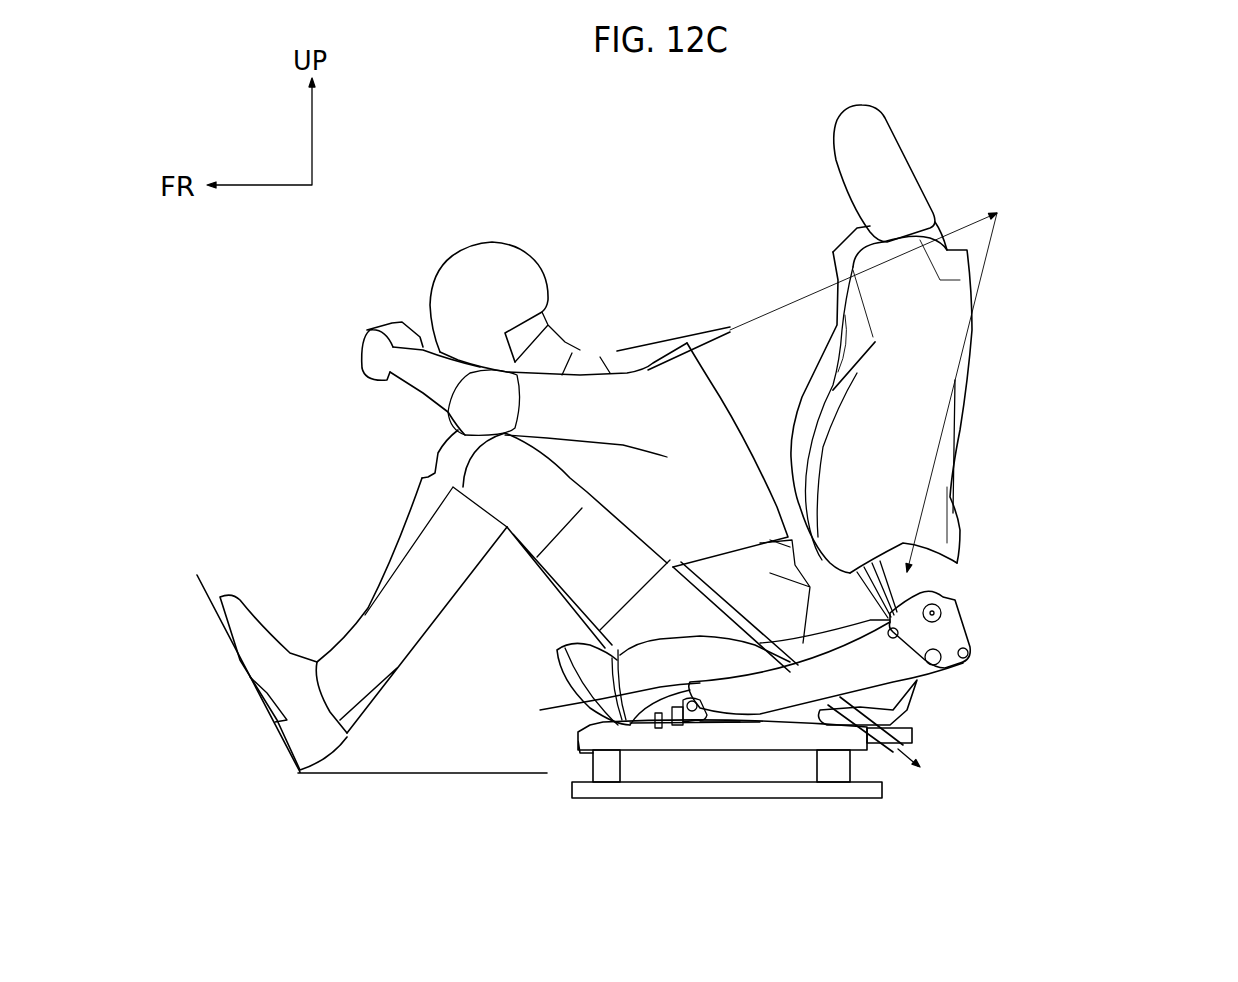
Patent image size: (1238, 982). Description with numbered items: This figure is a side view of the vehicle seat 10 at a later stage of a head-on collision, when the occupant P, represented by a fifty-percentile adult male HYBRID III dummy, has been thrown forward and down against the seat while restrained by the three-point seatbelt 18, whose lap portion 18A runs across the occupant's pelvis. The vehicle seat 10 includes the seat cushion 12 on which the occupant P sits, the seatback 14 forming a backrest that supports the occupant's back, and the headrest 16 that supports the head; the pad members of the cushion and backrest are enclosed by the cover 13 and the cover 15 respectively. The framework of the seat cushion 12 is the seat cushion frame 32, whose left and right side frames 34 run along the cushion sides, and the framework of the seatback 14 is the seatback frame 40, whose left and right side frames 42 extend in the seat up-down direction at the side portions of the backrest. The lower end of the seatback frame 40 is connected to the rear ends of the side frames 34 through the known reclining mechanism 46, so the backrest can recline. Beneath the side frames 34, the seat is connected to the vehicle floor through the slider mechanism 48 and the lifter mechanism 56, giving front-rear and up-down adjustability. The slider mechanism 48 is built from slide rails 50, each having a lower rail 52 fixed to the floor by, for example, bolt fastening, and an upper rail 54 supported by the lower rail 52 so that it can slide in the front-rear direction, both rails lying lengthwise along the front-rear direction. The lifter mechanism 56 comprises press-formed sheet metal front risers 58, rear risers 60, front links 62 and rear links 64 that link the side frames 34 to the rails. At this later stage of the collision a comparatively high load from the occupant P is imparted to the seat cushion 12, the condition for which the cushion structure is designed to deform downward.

The vehicle seat 10 is at (1072, 262).
The seat cushion 12 is at (548, 656).
The cover 13 is at (660, 667).
The seatback 14 is at (967, 380).
The cover 15 is at (923, 440).
The headrest 16 is at (900, 150).
The three-point seatbelt 18 is at (690, 338).
The lap belt portion 18A is at (710, 598).
The seat cushion frame 32 is at (692, 805).
The side frames 34 is at (717, 713).
The seatback frame 40 is at (877, 589).
The side frames 42 is at (935, 572).
The reclining mechanism 46 is at (987, 625).
The slider mechanism 48 is at (721, 766).
The slide rails 50 is at (732, 753).
The lower rail 52 is at (782, 745).
The upper rail 54 is at (915, 738).
The lifter mechanism 56 is at (983, 677).
The front risers 58 is at (677, 718).
The rear risers 60 is at (905, 717).
The front links 62 is at (683, 707).
The rear links 64 is at (905, 697).
The occupant P is at (470, 258).